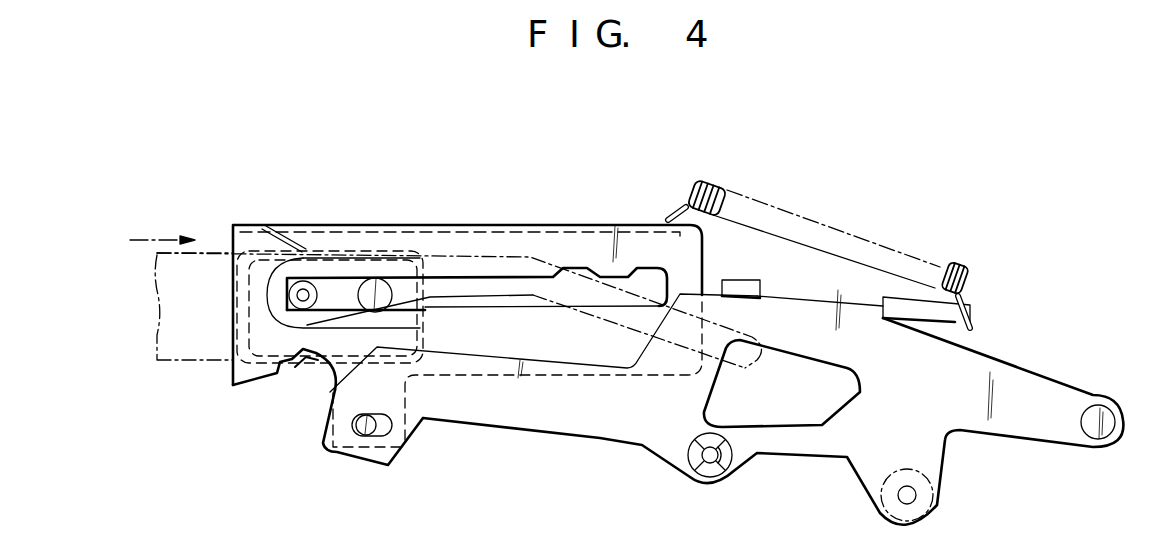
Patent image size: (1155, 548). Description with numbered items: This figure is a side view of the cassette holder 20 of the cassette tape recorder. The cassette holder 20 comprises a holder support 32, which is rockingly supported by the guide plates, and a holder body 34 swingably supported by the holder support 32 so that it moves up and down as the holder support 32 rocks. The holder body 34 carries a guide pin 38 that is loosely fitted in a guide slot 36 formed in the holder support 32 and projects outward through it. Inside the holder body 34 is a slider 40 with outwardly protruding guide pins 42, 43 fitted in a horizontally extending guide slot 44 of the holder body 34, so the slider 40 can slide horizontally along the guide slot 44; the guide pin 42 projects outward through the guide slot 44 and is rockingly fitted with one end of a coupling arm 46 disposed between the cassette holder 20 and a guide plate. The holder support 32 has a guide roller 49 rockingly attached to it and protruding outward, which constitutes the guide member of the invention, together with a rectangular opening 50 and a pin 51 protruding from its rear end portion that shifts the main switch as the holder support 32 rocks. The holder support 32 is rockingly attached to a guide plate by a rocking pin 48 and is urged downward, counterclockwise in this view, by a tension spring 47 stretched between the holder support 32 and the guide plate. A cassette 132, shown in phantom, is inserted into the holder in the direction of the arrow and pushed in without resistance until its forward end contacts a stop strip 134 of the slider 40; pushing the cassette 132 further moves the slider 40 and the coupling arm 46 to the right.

The cassette holder 20 is at (843, 210).
The holder support 32 is at (637, 447).
The holder body 34 is at (533, 228).
The guide slot 36 is at (392, 430).
The guide pin 38 is at (369, 420).
The slider 40 is at (248, 280).
The guide pin 42 is at (303, 302).
The guide pin 43 is at (375, 312).
The guide slot 44 is at (530, 305).
The coupling arm 46 is at (630, 317).
The tension spring 47 is at (903, 260).
The rocking pin 48 is at (927, 497).
The guide roller 49 is at (727, 458).
The rectangular opening 50 is at (843, 370).
The pin 51 is at (1088, 414).
The cassette 132 is at (219, 357).
The stop strip 134 is at (424, 321).